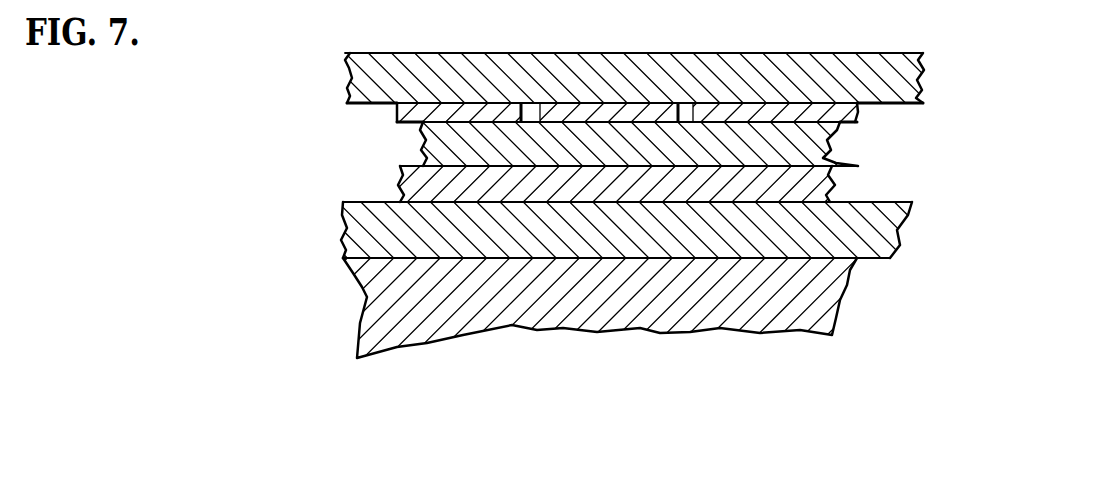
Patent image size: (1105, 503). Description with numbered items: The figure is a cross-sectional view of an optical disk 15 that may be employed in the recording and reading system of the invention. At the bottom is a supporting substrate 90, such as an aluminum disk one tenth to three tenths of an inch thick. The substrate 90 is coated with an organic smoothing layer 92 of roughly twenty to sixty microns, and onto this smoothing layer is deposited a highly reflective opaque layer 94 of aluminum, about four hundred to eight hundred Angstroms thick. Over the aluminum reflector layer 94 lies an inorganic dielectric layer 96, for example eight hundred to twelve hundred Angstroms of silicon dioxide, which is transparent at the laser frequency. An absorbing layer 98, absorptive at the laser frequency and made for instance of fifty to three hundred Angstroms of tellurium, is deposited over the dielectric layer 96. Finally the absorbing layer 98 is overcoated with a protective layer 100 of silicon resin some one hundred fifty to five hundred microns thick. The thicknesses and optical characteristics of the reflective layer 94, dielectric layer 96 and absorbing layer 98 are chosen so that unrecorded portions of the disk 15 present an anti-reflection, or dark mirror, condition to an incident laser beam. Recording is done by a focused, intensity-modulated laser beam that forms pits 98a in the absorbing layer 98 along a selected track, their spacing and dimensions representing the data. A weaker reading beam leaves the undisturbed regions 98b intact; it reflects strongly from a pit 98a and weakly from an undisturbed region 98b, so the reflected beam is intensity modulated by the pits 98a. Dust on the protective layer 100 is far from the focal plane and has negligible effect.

The disk 15 is at (985, 55).
The supporting substrate 90 is at (845, 296).
The organic smoothing layer 92 is at (356, 232).
The highly reflective opaque layer 94 is at (830, 185).
The inorganic dielectric layer 96 is at (425, 148).
The absorbing layer 98 is at (858, 113).
The pits 98a is at (530, 103).
The undisturbed regions 98b is at (615, 103).
The protective layer 100 is at (352, 78).